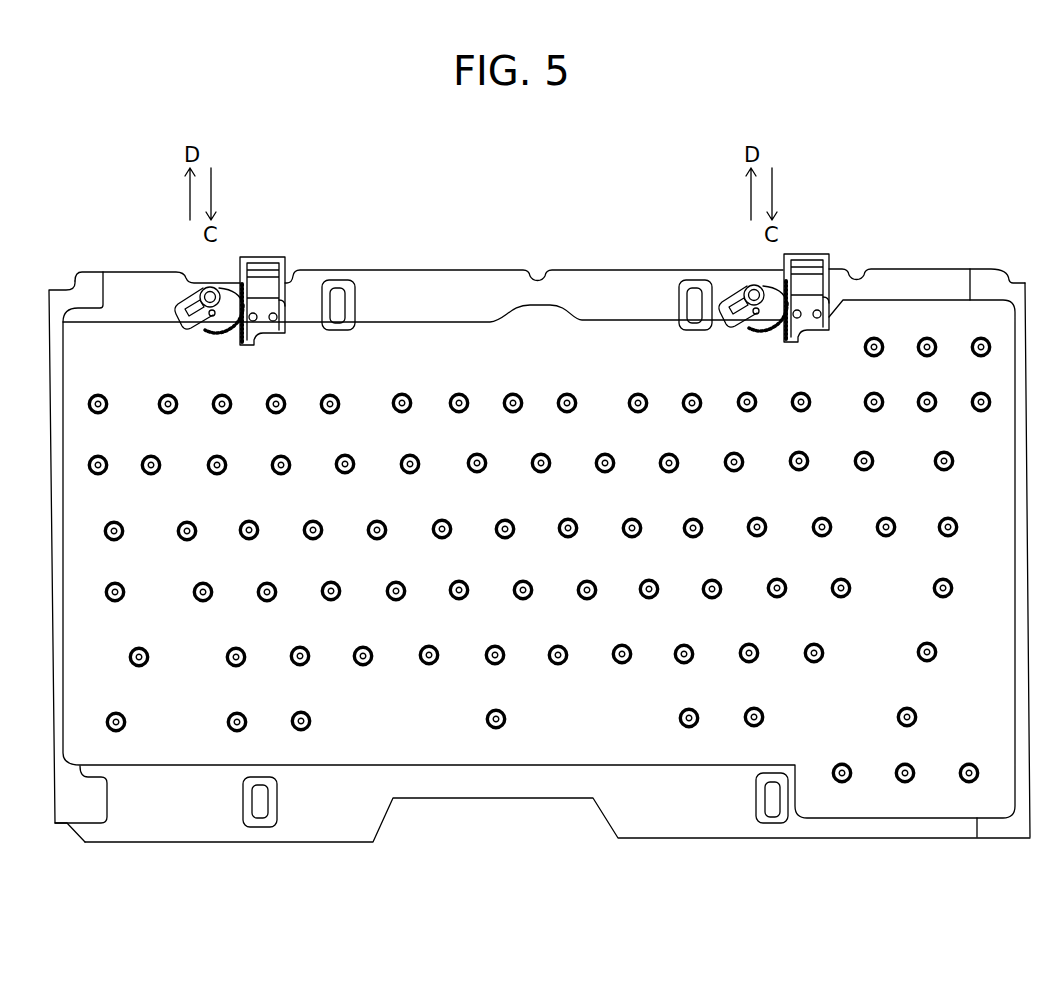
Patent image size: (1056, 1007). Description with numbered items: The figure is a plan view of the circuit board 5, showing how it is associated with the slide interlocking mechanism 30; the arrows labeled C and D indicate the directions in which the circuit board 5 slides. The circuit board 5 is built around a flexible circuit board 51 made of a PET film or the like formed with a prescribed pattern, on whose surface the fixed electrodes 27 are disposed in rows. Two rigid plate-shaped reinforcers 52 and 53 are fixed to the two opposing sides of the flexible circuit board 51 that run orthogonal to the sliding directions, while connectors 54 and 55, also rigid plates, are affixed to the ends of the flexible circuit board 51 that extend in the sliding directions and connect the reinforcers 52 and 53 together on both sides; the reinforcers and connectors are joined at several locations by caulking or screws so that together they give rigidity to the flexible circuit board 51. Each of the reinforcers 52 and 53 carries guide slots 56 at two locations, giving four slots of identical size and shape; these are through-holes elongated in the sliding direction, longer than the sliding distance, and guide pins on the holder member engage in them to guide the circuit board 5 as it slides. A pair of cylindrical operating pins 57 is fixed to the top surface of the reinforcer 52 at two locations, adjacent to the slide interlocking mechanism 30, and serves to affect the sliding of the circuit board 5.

The circuit board 5 is at (505, 212).
The fixed electrodes 27 is at (458, 393).
The slide interlocking mechanism 30 is at (273, 240).
The flexible circuit board 51 is at (613, 332).
The reinforcer 52 is at (403, 270).
The reinforcer 53 is at (345, 832).
The connector 54 is at (63, 813).
The connector 55 is at (1013, 827).
The guide slots 56 is at (333, 283).
The operating pins 57 is at (210, 331).